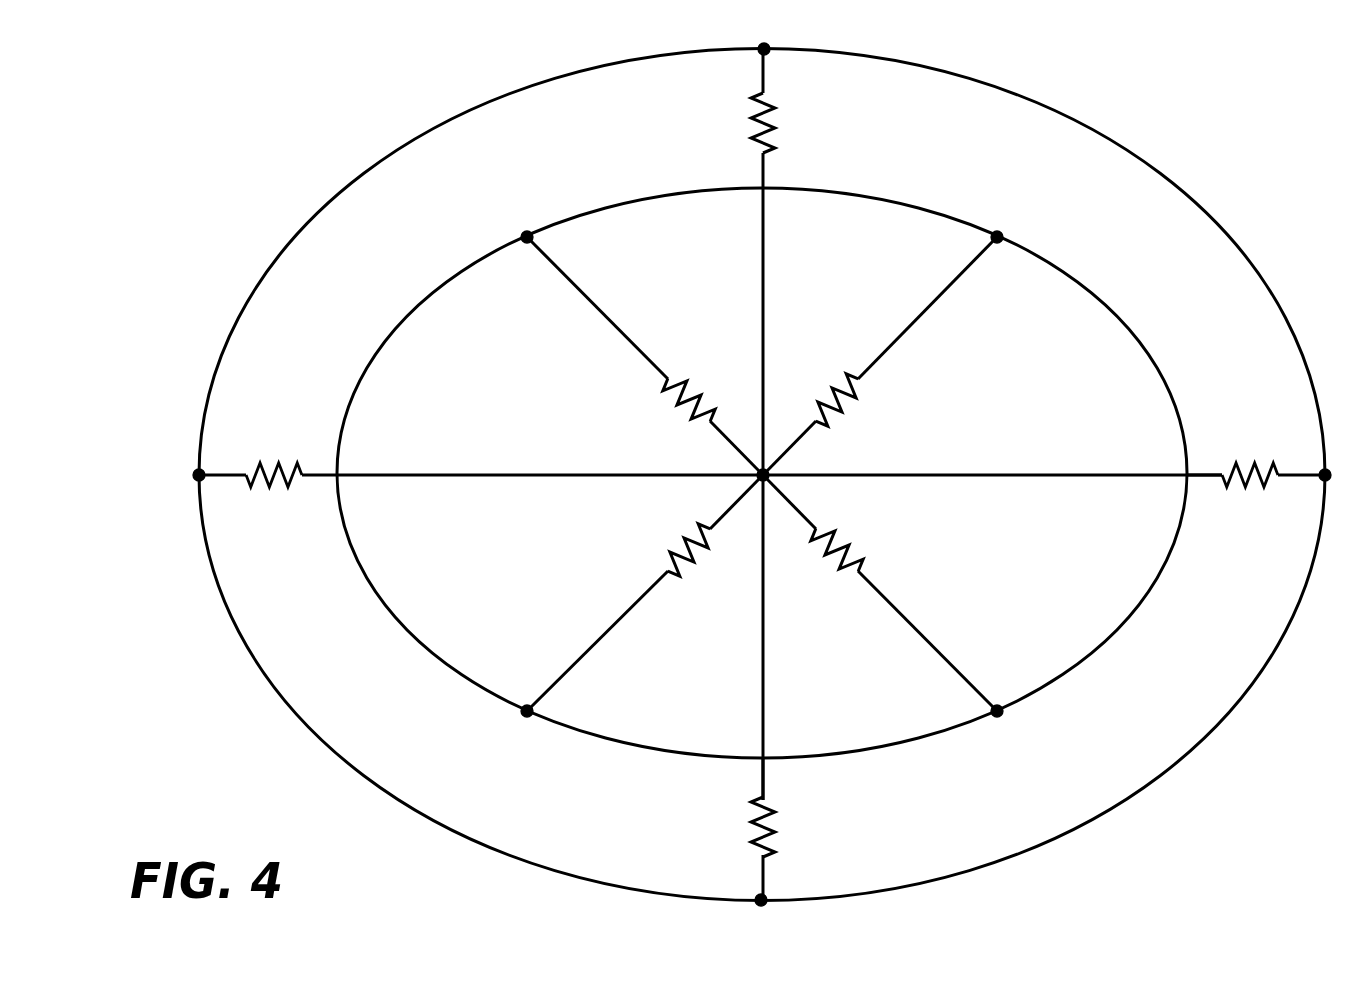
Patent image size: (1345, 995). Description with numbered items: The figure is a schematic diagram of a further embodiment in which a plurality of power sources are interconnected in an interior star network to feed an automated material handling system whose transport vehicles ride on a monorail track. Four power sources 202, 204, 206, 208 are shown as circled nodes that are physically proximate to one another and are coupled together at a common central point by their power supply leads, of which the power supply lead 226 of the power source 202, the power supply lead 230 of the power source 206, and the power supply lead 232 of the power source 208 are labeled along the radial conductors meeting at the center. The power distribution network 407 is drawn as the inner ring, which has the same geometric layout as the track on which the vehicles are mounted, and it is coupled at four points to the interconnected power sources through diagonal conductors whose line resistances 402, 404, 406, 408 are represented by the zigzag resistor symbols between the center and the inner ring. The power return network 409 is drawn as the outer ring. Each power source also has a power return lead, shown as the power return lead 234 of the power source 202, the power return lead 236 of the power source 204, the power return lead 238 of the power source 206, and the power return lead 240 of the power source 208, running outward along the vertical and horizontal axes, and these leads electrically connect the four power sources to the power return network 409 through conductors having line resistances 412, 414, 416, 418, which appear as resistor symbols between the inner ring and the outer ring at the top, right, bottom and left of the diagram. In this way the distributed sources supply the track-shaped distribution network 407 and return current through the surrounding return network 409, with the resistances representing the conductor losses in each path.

The power return network 409 is at (1105, 135).
The power distribution network 407 is at (1062, 272).
The line resistance 412 is at (772, 120).
The line resistance 416 is at (770, 830).
The line resistance 414 is at (1264, 460).
The line resistance 418 is at (288, 460).
The line resistance 402 is at (862, 385).
The line resistance 404 is at (845, 535).
The line resistance 406 is at (668, 553).
The line resistance 408 is at (670, 400).
The power source 202 is at (744, 337).
The power source 204 is at (896, 488).
The power source 206 is at (743, 642).
The power source 208 is at (591, 489).
The power supply lead 226 is at (765, 400).
The power supply lead 230 is at (765, 550).
The power supply lead 232 is at (702, 478).
The power return lead 234 is at (765, 245).
The power return lead 236 is at (1015, 475).
The power return lead 238 is at (765, 712).
The power return lead 240 is at (495, 478).